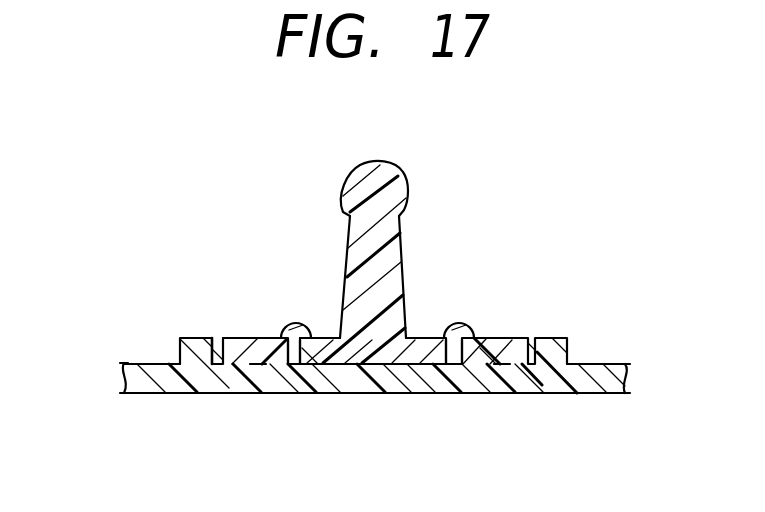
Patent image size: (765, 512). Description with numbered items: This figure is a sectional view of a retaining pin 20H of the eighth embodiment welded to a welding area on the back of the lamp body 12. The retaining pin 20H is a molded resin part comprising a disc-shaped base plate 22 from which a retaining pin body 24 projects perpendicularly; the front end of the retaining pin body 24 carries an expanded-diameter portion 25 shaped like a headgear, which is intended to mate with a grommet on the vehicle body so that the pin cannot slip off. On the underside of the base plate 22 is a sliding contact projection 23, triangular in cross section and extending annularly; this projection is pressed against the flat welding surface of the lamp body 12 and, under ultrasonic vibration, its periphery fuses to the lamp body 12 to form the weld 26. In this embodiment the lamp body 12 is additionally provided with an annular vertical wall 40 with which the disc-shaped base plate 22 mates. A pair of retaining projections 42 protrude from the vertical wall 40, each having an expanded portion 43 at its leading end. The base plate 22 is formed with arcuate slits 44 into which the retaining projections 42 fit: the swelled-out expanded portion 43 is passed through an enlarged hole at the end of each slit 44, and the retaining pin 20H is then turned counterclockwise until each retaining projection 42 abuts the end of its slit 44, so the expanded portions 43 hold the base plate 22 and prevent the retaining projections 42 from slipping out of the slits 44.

The lamp body 12 is at (136, 394).
The retaining pin 20H is at (318, 232).
The base plate 22 is at (518, 338).
The sliding contact projection 23 is at (258, 368).
The retaining pin body 24 is at (400, 247).
The expanded-diameter portion 25 is at (388, 171).
The weld 26 is at (233, 395).
The annular vertical wall 40 is at (184, 332).
The retaining projection 42 is at (285, 327).
The expanded portion 43 is at (308, 323).
The arcuate slit 44 is at (297, 373).